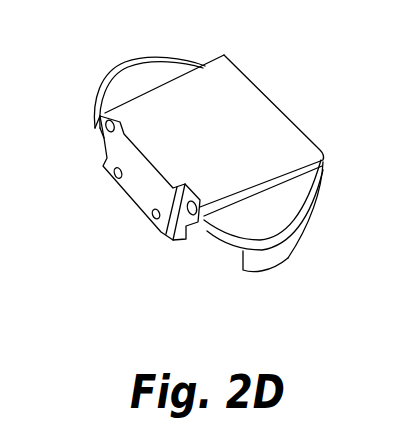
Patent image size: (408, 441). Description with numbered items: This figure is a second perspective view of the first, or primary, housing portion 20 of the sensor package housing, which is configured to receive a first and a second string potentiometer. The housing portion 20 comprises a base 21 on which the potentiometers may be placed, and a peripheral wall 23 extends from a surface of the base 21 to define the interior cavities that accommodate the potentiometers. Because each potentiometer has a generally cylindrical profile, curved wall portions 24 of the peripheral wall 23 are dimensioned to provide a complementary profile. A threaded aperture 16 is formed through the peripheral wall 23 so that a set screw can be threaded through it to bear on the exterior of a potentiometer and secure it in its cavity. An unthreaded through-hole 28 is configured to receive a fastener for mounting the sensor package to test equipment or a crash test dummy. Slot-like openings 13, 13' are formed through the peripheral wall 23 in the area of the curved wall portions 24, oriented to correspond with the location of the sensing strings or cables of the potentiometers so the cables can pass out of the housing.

The slot-like opening 13 is at (102, 199).
The slot-like opening 13' is at (241, 170).
The aperture 16 is at (155, 218).
The first housing portion 20 is at (236, 112).
The base 21 is at (251, 133).
The peripheral wall 23 is at (107, 199).
The curved wall portion 24 is at (143, 60).
The aperture 28 is at (99, 123).